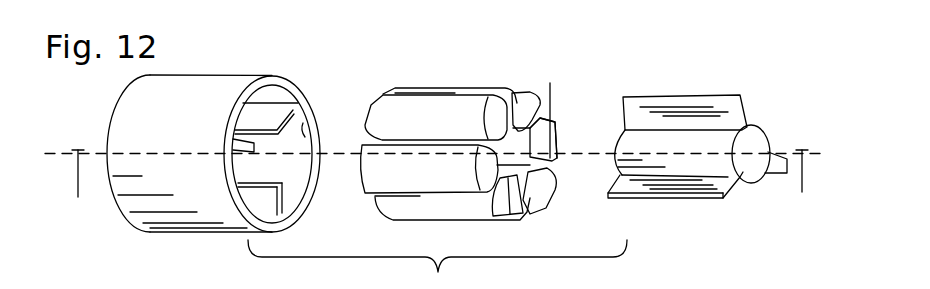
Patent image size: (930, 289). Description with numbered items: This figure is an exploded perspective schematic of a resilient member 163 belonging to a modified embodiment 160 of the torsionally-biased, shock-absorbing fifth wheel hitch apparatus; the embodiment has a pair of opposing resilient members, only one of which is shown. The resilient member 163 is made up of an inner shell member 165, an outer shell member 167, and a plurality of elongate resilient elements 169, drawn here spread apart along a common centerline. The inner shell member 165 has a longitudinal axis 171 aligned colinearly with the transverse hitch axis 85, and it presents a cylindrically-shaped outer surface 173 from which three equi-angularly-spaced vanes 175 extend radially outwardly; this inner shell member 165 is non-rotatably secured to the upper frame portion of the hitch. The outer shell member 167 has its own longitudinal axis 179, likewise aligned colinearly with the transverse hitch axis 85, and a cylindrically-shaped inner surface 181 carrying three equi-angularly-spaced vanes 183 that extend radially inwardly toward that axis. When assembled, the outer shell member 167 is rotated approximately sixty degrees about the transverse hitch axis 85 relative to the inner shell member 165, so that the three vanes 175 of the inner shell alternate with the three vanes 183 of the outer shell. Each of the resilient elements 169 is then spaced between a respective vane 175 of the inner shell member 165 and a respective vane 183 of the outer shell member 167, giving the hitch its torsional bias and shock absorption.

The modified embodiment of the torsionally-biased, shock-absorbing fifth wheel hitch 160 is at (690, 121).
The resilient member 163 is at (451, 66).
The inner shell member 165 is at (758, 140).
The outer shell member 167 is at (228, 78).
The elongate resilient element 169 is at (530, 96).
The longitudinal axis of inner shell member 171 is at (785, 186).
The cylindrically-shaped outer surface 173 is at (623, 142).
The vane of inner shell member 175 is at (730, 105).
The longitudinal axis of outer shell member 179 is at (78, 173).
The cylindrically-shaped inner surface 181 is at (304, 116).
The vane of outer shell member 183 is at (282, 133).
The transverse hitch axis 85 is at (432, 192).